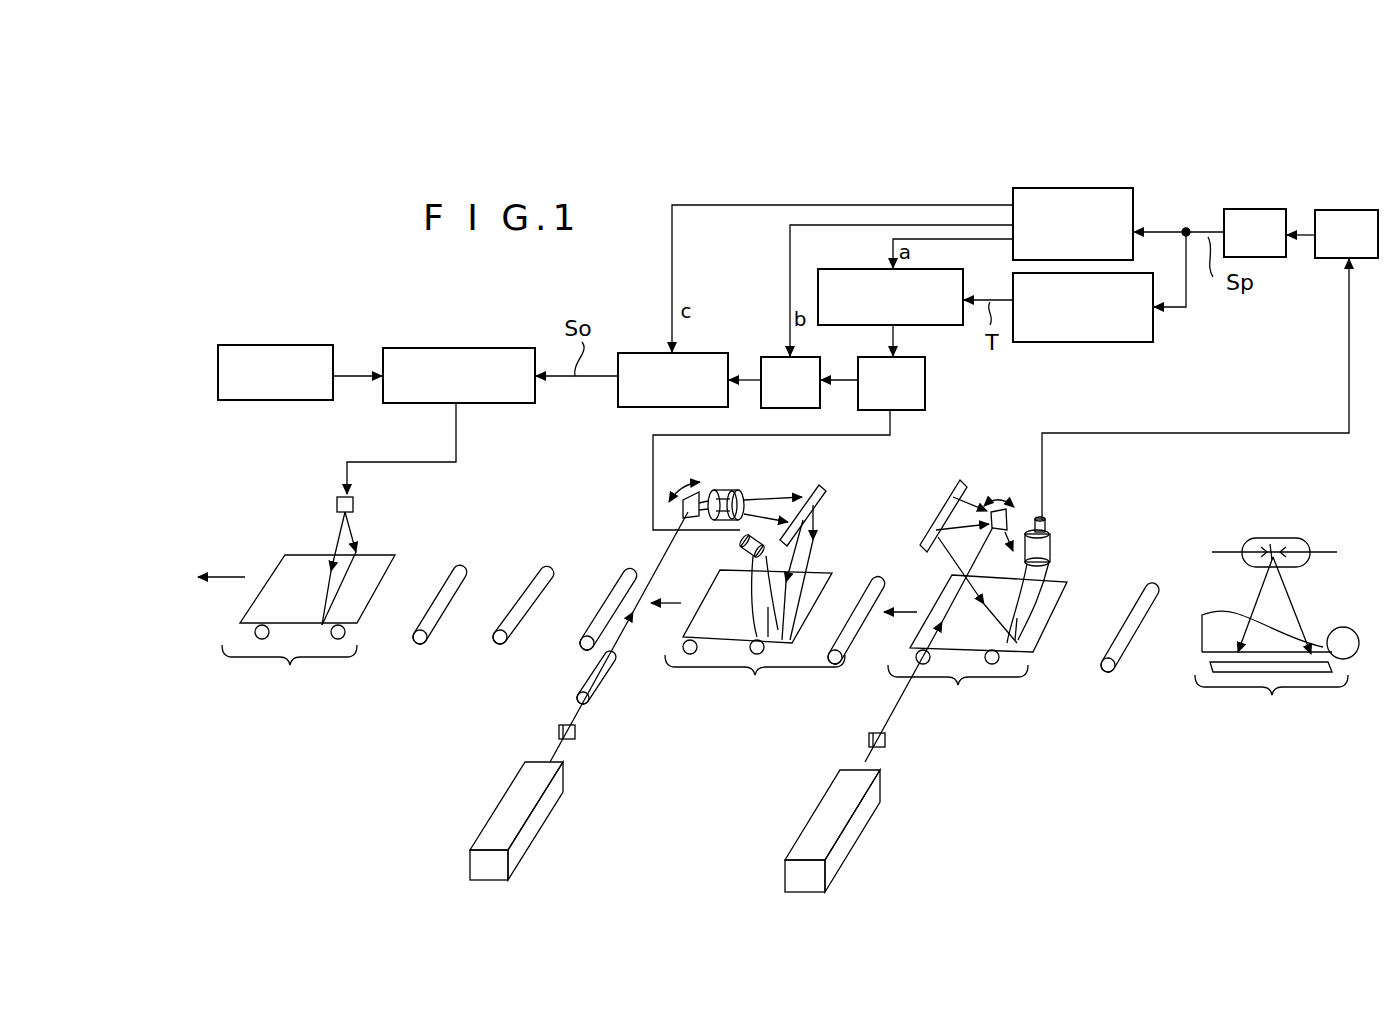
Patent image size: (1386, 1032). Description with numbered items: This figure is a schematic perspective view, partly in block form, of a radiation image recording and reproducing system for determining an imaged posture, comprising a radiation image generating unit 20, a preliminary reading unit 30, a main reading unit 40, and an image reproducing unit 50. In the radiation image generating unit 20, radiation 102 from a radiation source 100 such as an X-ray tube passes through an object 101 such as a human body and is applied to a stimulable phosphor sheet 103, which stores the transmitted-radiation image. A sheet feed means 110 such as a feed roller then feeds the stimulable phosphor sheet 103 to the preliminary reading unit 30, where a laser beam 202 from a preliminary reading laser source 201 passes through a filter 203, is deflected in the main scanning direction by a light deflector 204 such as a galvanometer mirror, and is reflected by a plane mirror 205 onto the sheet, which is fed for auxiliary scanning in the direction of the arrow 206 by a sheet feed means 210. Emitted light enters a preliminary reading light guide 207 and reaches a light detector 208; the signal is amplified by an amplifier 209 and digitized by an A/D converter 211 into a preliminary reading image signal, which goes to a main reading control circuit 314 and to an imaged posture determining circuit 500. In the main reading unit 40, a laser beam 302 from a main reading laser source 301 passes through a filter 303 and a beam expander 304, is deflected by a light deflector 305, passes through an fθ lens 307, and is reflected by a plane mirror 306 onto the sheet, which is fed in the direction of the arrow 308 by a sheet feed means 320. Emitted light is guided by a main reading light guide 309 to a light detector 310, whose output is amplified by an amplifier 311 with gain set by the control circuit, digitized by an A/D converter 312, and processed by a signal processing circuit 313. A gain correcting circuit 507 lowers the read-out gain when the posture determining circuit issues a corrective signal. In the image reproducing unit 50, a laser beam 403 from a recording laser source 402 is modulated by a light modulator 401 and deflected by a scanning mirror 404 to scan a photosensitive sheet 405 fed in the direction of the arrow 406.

The radiation source 100 is at (1285, 538).
The object 101 is at (1283, 632).
The radiation 102 is at (1262, 605).
The stimulable phosphor sheet 103 is at (815, 592).
The radiation image generating unit 20 is at (1271, 698).
The sheet feed means 110 is at (1113, 677).
The preliminary reading laser source 201 is at (852, 835).
The laser beam 202 is at (872, 760).
The filter 203 is at (888, 740).
The light deflector 204 is at (1010, 524).
The plane mirror 205 is at (957, 481).
The arrow 206 is at (904, 612).
The preliminary reading light guide 207 is at (1044, 574).
The light detector 208 is at (1050, 532).
The amplifier 209 is at (1348, 210).
The sheet feed means 210 is at (995, 668).
The A/D converter 211 is at (1246, 209).
The preliminary reading unit 30 is at (958, 687).
The main reading laser source 301 is at (543, 815).
The laser beam 302 is at (560, 748).
The filter 303 is at (580, 730).
The beam expander 304 is at (607, 679).
The light deflector 305 is at (692, 500).
The plane mirror 306 is at (822, 487).
The fθ lens 307 is at (738, 494).
The arrow 308 is at (672, 603).
The main reading light guide 309 is at (794, 574).
The light detector 310 is at (742, 548).
The amplifier 311 is at (925, 387).
The A/D converter 312 is at (770, 357).
The signal processing circuit 313 is at (643, 353).
The main reading control circuit 314 is at (1133, 200).
The sheet feed means 320 is at (785, 650).
The main reading unit 40 is at (755, 678).
The light modulator 401 is at (486, 348).
The recording laser source 402 is at (278, 345).
The laser beam 403 is at (358, 372).
The scanning mirror 404 is at (355, 508).
The photosensitive sheet 405 is at (301, 566).
The arrow 406 is at (234, 577).
The image reproducing unit 50 is at (289, 659).
The imaged posture determining circuit 500 is at (1132, 342).
The gain correcting circuit 507 is at (955, 327).